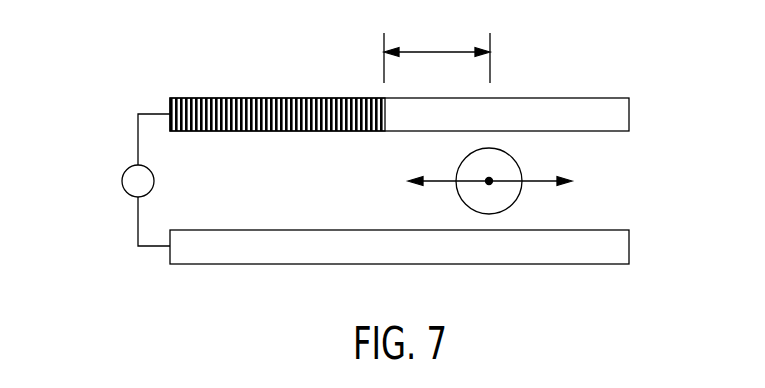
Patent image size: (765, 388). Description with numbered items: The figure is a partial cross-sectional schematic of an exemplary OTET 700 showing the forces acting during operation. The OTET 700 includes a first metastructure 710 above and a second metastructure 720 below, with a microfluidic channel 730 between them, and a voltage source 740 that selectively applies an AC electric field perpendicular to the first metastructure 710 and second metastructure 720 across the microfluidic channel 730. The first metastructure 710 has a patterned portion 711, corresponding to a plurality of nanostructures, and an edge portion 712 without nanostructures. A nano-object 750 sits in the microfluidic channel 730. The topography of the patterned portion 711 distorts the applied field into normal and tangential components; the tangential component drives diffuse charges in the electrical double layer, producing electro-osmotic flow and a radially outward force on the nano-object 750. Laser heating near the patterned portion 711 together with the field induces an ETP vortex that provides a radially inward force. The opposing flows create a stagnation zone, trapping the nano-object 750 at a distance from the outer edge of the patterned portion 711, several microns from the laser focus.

The OTET 700 is at (52, 92).
The first metastructure 710 is at (447, 70).
The patterned portion 711 is at (206, 98).
The edge portion 712 is at (629, 99).
The second metastructure 720 is at (629, 245).
The microfluidic channel 730 is at (578, 198).
The voltage source 740 is at (122, 181).
The nano-object 750 is at (508, 152).